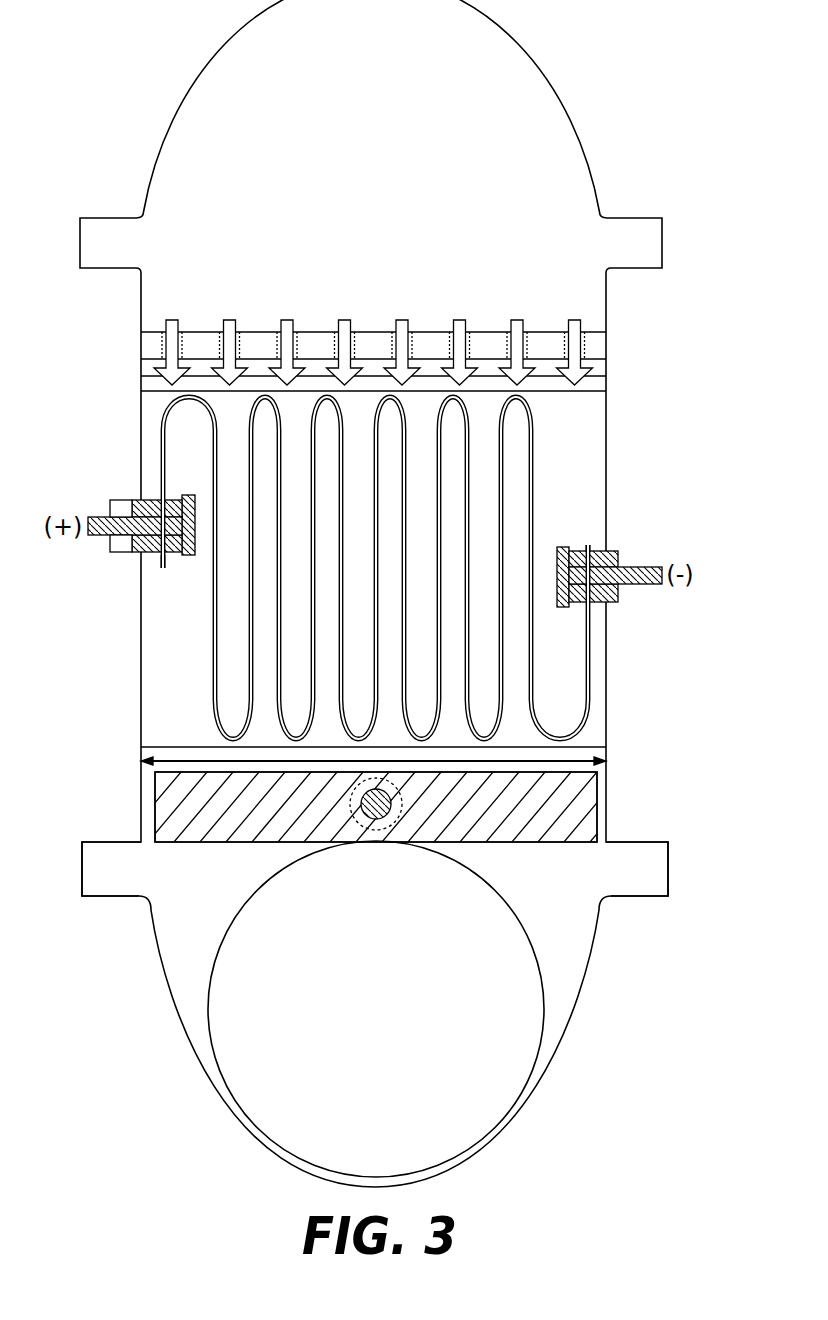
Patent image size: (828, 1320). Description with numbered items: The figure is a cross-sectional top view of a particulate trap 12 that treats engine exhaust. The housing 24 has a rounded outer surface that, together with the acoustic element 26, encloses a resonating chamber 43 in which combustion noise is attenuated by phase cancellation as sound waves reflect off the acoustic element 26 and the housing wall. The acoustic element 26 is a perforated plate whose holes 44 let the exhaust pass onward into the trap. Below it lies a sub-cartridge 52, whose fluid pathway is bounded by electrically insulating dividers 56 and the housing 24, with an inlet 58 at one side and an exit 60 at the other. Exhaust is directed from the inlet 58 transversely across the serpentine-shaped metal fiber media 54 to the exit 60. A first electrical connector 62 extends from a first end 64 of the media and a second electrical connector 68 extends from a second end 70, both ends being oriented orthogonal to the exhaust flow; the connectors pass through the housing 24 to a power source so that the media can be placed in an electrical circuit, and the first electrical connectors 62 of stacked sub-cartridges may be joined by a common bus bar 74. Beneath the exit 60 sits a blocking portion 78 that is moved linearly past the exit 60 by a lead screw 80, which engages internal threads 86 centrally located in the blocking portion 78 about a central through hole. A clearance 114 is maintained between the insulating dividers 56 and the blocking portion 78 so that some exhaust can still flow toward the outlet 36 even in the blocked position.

The particulate trap 12 is at (163, 1108).
The housing 24 is at (556, 79).
The resonating chamber 43 is at (352, 174).
The acoustic element 26 is at (150, 345).
The holes 44 is at (168, 322).
The inlet 58 is at (427, 358).
The sub-cartridge 52 is at (618, 417).
The electrically insulating dividers 56 is at (578, 462).
The serpentine-shaped metal fiber media 54 is at (590, 716).
The first electrical connector 62 is at (110, 500).
The common bus bar 74 is at (110, 556).
The first end 64 is at (164, 560).
The second electrical connector 68 is at (656, 567).
The second end 70 is at (588, 545).
The clearance 114 is at (142, 760).
The exit 60 is at (286, 772).
The lead screw 80 is at (368, 814).
The internal threads 86 is at (412, 824).
The blocking portion 78 is at (594, 845).
The outlet 36 is at (382, 1023).